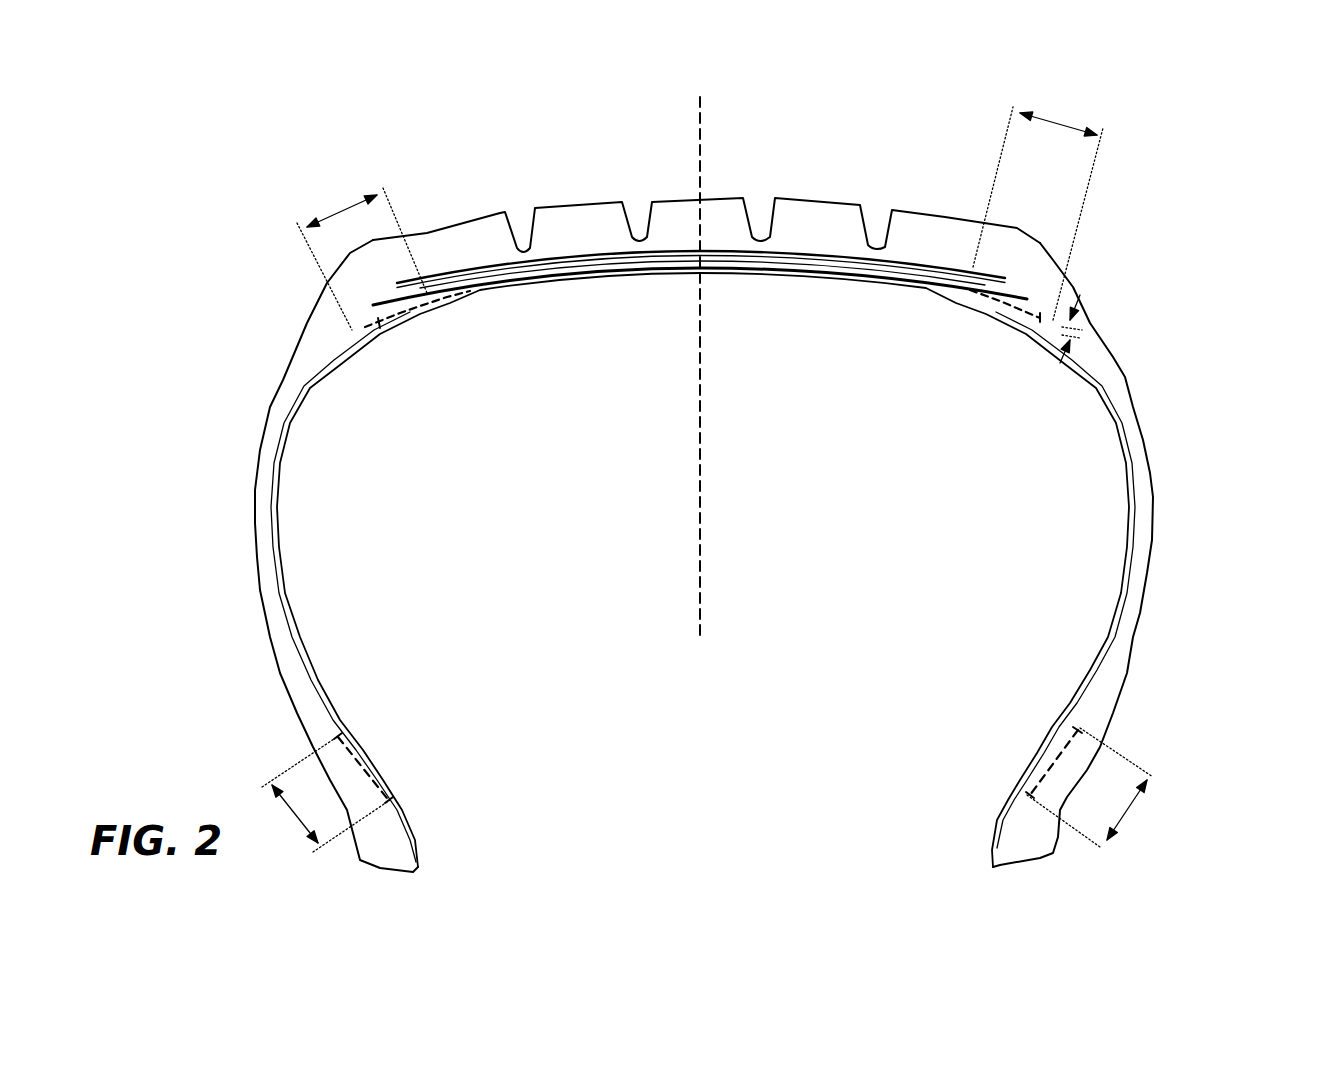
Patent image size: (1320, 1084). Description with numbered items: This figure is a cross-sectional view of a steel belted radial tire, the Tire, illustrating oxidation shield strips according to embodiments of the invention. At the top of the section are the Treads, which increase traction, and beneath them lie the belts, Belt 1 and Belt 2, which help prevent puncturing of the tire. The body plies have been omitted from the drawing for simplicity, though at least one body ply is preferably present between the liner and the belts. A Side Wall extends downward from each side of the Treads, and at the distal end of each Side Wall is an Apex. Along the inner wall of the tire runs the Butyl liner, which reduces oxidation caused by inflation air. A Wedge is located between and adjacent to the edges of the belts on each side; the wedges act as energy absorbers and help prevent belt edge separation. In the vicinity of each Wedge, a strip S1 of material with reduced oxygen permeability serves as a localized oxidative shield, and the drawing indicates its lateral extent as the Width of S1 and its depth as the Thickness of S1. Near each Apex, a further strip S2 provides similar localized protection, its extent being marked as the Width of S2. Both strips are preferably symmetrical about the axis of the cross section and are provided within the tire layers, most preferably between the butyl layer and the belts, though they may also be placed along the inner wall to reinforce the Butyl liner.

The tire Tire is at (1115, 178).
The treads Treads is at (913, 222).
The side wall Side Wall is at (265, 508).
The butyl liner Butyl liner is at (1107, 627).
The belt Belt 1 is at (684, 262).
The belt Belt 2 is at (820, 257).
The wedge Wedge is at (403, 307).
The oxidation shield strip S1 is at (373, 272).
The oxidation shield strip S2 is at (350, 742).
The apex Apex is at (345, 782).
The width of strip S1 Width of S1 is at (692, 214).
The thickness of strip S1 Thickness of S1 is at (1128, 322).
The width of strip S2 Width of S2 is at (708, 790).